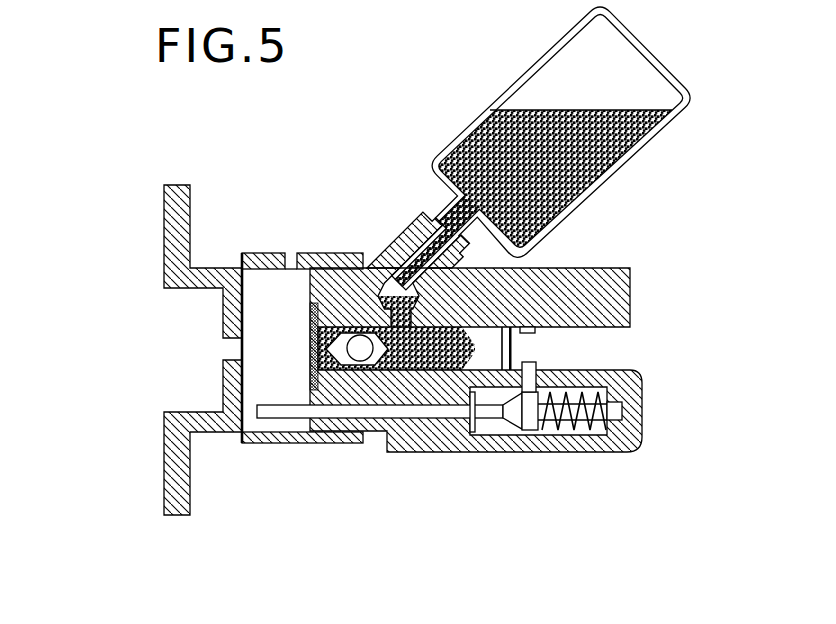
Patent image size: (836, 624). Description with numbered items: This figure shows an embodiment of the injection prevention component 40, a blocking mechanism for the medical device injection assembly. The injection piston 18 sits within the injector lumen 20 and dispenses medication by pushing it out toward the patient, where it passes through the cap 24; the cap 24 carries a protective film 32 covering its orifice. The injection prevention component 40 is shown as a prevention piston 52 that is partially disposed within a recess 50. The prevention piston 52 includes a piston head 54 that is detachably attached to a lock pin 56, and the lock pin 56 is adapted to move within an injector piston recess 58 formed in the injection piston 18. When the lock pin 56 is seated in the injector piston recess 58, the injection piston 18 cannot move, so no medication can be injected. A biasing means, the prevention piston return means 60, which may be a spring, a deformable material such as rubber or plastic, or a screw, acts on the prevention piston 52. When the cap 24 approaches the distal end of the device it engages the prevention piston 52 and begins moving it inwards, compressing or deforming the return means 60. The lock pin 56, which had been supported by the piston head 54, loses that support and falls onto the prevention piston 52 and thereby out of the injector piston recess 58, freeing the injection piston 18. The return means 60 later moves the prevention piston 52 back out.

The injection piston 18 is at (615, 345).
The injector lumen 20 is at (443, 343).
The cap 24 is at (177, 208).
The film 32 is at (235, 348).
The injection prevention component 40 is at (353, 473).
The recess 50 is at (275, 370).
The prevention piston 52 is at (257, 415).
The piston head 54 is at (513, 413).
The lock pin 56 is at (532, 378).
The injector piston recess 58 is at (532, 365).
The prevention piston return means 60 is at (567, 430).